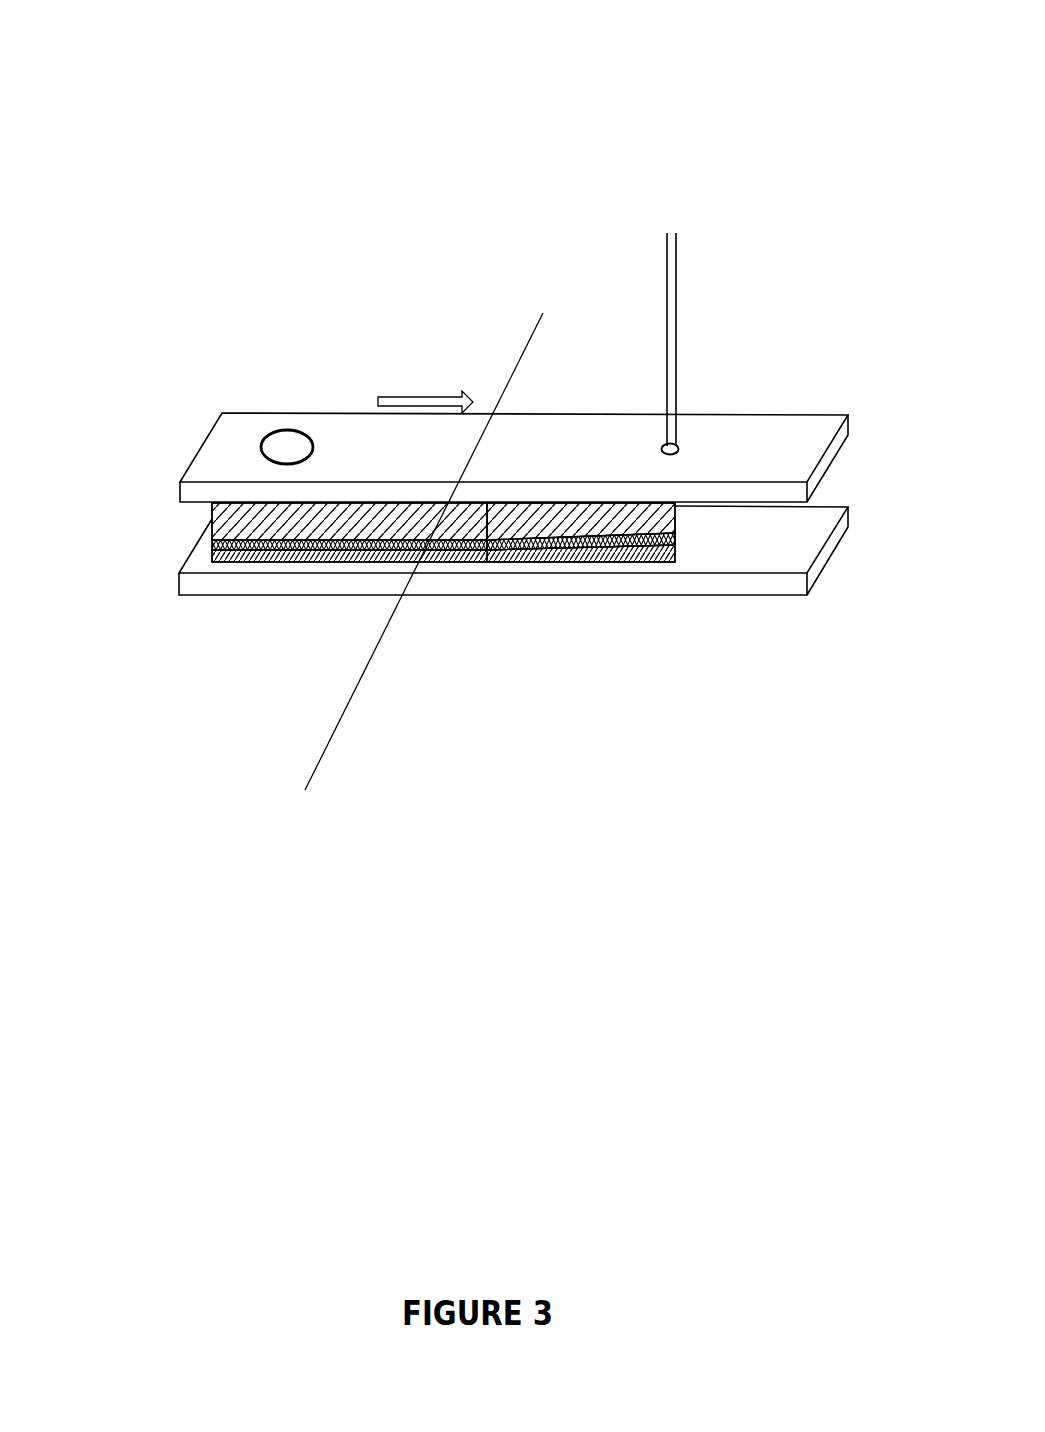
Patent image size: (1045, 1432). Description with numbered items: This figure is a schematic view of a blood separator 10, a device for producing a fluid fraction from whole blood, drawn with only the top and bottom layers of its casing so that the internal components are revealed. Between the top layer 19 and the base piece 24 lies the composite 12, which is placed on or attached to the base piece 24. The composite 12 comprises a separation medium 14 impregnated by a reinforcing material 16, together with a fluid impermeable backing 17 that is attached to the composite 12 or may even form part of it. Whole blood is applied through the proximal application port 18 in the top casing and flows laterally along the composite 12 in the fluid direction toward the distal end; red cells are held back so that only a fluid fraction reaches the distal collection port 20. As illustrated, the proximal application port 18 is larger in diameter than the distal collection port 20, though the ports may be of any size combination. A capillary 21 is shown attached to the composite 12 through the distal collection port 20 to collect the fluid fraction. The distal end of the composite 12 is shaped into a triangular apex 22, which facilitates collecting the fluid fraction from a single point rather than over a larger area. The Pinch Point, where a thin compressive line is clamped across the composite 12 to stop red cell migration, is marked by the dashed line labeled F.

The blood separator 10 is at (285, 143).
The composite 12 is at (168, 502).
The separation medium 14 is at (515, 518).
The reinforcing material 16 is at (606, 562).
The fluid impermeable backing 17 is at (590, 562).
The proximal application port 18 is at (291, 425).
The top plate 19 is at (780, 442).
The distal collection port 20 is at (653, 454).
The capillary 21 is at (678, 287).
The apex 22 is at (677, 552).
The base piece 24 is at (830, 555).